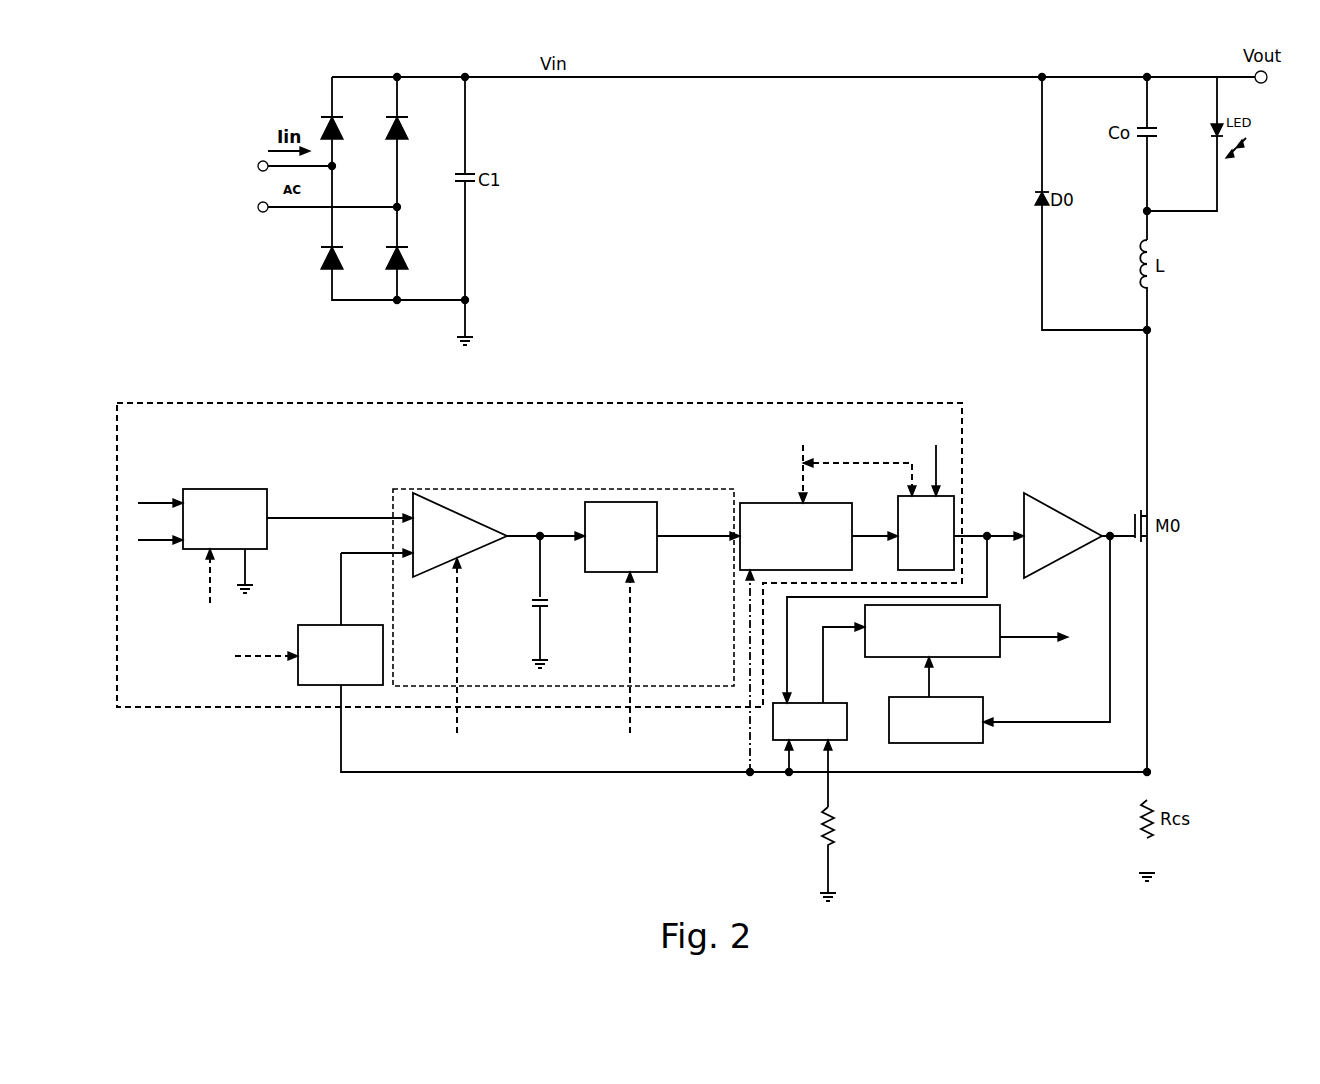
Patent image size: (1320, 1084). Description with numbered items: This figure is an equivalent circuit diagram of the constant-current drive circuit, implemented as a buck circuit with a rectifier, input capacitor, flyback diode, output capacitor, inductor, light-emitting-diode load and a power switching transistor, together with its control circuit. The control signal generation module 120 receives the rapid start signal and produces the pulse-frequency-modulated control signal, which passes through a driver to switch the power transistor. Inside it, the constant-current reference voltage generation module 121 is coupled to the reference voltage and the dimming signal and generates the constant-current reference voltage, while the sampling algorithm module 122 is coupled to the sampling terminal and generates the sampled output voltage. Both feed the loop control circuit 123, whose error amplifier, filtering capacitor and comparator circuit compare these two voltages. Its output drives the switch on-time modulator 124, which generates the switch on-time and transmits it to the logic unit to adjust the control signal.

The control signal generation module 120 is at (612, 395).
The constant-current reference voltage generation module 121 is at (224, 480).
The sampling algorithm module 122 is at (322, 615).
The loop control circuit 123 is at (551, 480).
The switch on-time modulator 124 is at (748, 492).